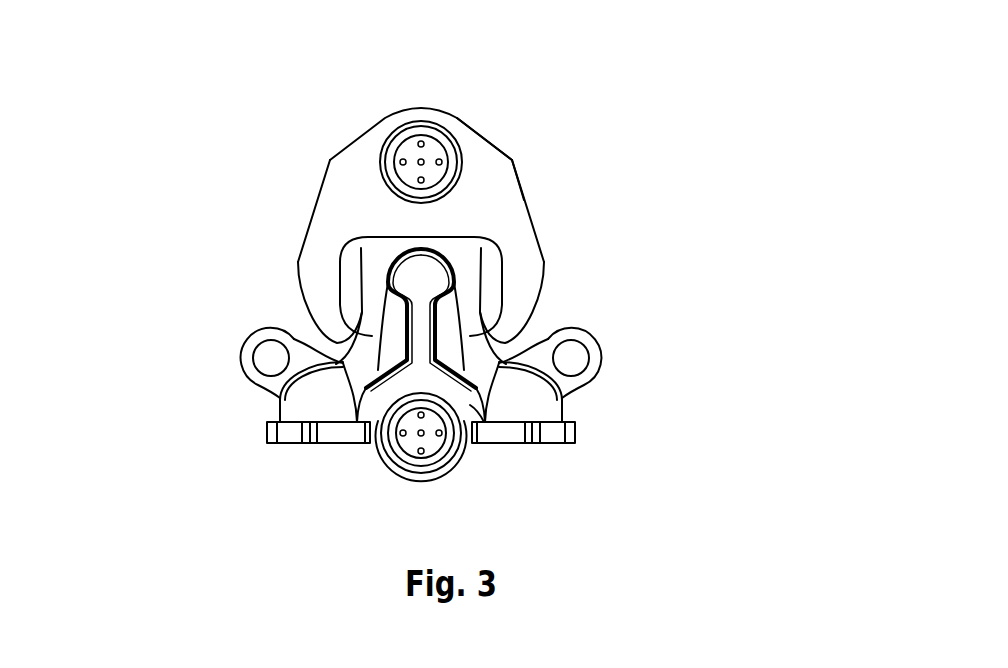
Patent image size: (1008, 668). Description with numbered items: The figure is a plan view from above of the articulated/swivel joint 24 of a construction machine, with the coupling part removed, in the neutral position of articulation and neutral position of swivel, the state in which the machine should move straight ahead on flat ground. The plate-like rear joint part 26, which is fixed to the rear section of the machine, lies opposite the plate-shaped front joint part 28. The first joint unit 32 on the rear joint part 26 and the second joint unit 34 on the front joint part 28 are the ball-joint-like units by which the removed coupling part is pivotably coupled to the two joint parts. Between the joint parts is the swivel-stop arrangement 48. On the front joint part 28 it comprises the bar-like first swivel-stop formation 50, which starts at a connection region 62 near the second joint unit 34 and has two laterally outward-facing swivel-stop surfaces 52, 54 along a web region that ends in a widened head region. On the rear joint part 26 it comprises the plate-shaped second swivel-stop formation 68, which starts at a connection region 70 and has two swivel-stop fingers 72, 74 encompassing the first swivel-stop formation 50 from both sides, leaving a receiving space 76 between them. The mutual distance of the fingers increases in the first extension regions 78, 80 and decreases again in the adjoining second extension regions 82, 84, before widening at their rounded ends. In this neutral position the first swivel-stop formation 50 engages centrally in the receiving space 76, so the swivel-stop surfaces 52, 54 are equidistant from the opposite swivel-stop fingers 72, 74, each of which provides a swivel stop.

The articulated/swivel joint 24 is at (698, 94).
The rear joint part 26 is at (423, 191).
The front joint part 28 is at (421, 442).
The first joint unit 32 is at (430, 127).
The second joint unit 34 is at (447, 453).
The swivel-stop arrangement 48 is at (205, 220).
The first swivel-stop formation 50 is at (344, 279).
The swivel-stop surface 52 is at (402, 334).
The swivel-stop surface 54 is at (440, 338).
The connection region 62 is at (475, 410).
The second swivel-stop formation 68 is at (516, 130).
The connection region 70 is at (478, 190).
The swivel-stop finger 72 is at (377, 323).
The swivel-stop finger 74 is at (530, 336).
The receiving space 76 is at (380, 248).
The first extension region 78 is at (318, 230).
The first extension region 80 is at (538, 243).
The second extension region 82 is at (320, 293).
The second extension region 84 is at (530, 293).